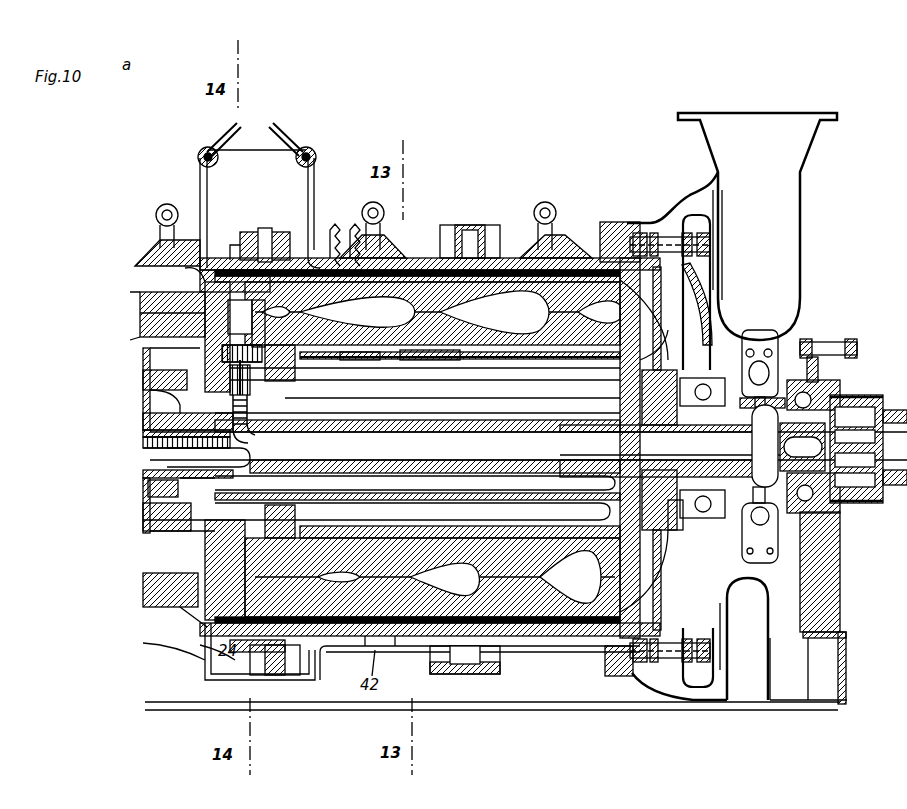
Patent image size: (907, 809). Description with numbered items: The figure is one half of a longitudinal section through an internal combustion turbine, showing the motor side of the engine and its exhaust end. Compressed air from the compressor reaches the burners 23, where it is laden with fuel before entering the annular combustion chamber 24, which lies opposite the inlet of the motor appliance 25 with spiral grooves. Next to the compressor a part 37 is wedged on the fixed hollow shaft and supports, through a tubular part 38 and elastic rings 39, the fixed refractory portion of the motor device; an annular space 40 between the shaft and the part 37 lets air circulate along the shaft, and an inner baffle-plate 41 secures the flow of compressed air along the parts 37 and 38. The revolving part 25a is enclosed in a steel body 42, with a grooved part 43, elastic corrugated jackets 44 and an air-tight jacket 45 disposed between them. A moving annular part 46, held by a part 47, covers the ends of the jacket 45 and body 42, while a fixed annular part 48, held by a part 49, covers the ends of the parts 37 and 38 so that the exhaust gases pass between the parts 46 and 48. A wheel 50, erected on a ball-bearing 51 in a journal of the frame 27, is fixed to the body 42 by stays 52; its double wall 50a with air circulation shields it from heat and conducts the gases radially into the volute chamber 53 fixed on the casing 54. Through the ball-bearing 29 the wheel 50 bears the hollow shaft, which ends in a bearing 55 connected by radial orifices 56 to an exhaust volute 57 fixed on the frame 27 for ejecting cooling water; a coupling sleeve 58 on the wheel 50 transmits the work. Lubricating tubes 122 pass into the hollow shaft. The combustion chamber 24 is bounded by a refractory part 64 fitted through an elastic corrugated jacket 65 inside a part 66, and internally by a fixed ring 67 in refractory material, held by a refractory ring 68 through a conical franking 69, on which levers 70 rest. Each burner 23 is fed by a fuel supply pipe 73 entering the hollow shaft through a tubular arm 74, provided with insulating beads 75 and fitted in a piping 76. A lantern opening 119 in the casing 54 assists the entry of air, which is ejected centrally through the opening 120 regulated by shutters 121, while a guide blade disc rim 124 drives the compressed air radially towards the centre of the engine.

The opening 120 is at (252, 165).
The shutters 121 is at (300, 143).
The lantern opening 119 is at (466, 232).
The casing 54 is at (580, 250).
The stays 52 is at (672, 240).
The volute chamber 53 is at (740, 700).
The wheel 50 is at (705, 282).
The double wall 50a is at (700, 337).
The ball-bearing 51 is at (820, 352).
The coupling sleeve 58 is at (880, 398).
The bearing 55 is at (780, 470).
The radial orifices 56 is at (830, 505).
The exhaust volute 57 is at (760, 525).
The part 47 is at (690, 637).
The frame 27 is at (847, 683).
The air-tight jacket 45 is at (520, 600).
The elastic corrugated jackets 44 is at (398, 642).
The body 42 is at (300, 258).
The part 43 is at (350, 640).
The revolving part 25a is at (318, 660).
The part 64 is at (205, 660).
The combustion chamber 24 is at (283, 365).
The guide blade disc rim 124 is at (190, 618).
The moving annular part 46 is at (650, 575).
The fixed annular part 48 is at (645, 540).
The part 49 is at (690, 525).
The ball-bearing 29 is at (700, 500).
The tubes 122 is at (600, 455).
The elastic rings 39 is at (340, 555).
The baffle-plate 41 is at (340, 515).
The annular space 40 is at (396, 390).
The tubular part 38 is at (334, 362).
The part 37 is at (310, 395).
The insulating beads 75 is at (190, 455).
The piping 76 is at (250, 444).
The fuel supply pipe 73 is at (230, 411).
The tubular arm 74 is at (252, 411).
The burners 23 is at (285, 380).
The motor appliance 25 is at (352, 365).
The fixed ring 67 is at (240, 316).
The conical franking 69 is at (242, 337).
The levers 70 is at (158, 300).
The refractory ring 68 is at (230, 290).
The elastic corrugated jacket 65 is at (236, 256).
The part 66 is at (258, 240).